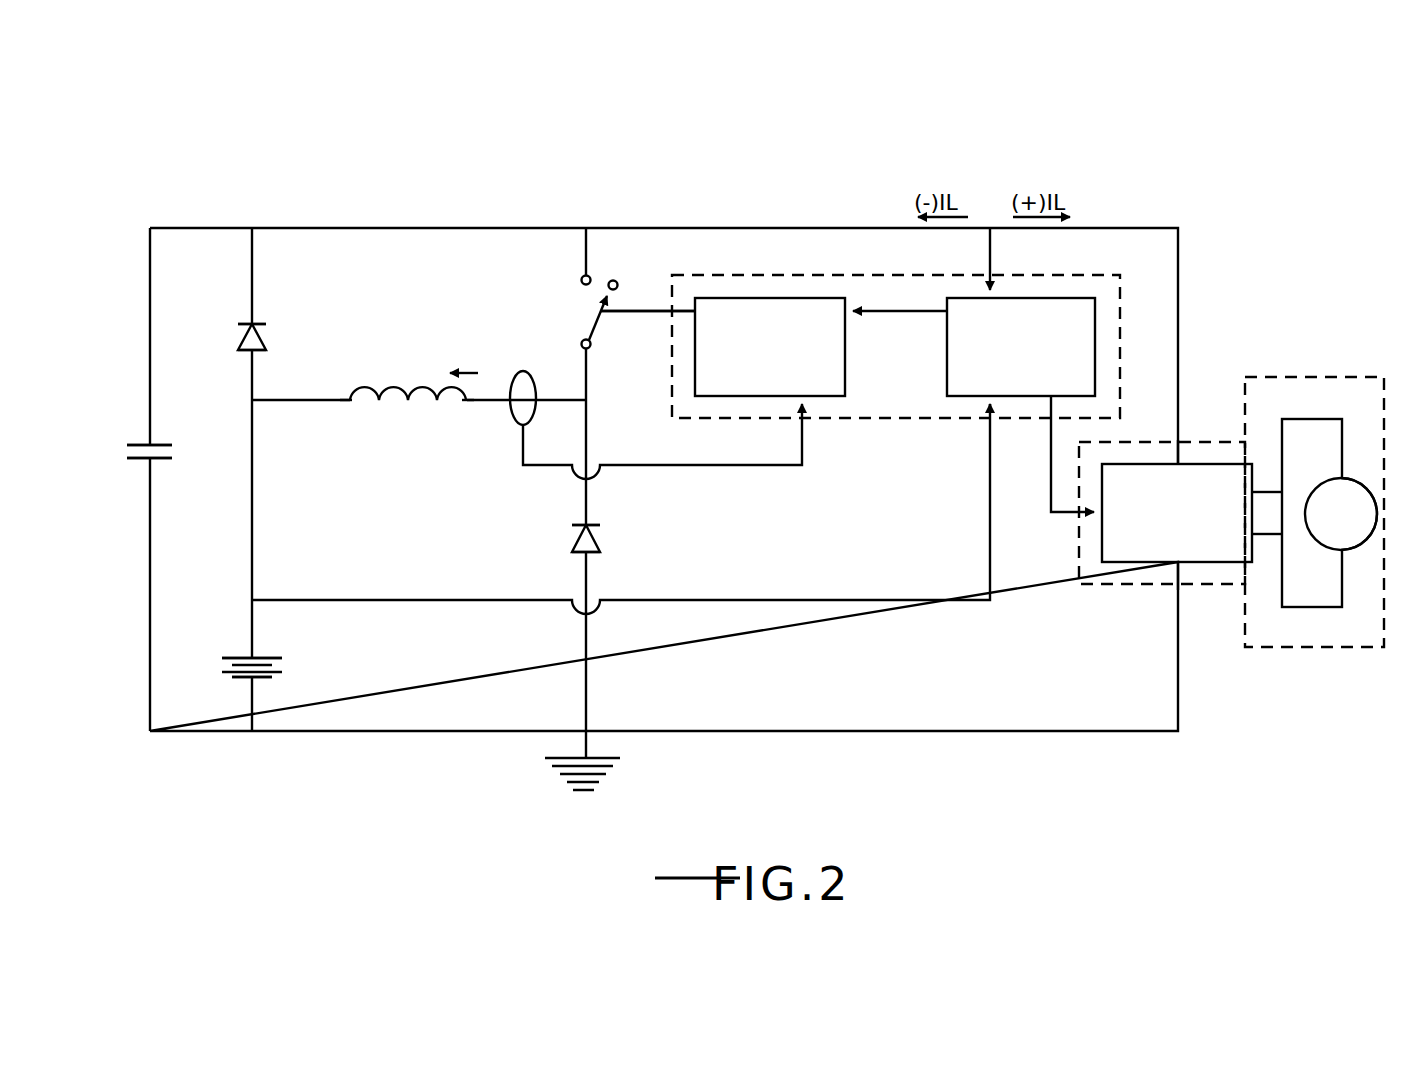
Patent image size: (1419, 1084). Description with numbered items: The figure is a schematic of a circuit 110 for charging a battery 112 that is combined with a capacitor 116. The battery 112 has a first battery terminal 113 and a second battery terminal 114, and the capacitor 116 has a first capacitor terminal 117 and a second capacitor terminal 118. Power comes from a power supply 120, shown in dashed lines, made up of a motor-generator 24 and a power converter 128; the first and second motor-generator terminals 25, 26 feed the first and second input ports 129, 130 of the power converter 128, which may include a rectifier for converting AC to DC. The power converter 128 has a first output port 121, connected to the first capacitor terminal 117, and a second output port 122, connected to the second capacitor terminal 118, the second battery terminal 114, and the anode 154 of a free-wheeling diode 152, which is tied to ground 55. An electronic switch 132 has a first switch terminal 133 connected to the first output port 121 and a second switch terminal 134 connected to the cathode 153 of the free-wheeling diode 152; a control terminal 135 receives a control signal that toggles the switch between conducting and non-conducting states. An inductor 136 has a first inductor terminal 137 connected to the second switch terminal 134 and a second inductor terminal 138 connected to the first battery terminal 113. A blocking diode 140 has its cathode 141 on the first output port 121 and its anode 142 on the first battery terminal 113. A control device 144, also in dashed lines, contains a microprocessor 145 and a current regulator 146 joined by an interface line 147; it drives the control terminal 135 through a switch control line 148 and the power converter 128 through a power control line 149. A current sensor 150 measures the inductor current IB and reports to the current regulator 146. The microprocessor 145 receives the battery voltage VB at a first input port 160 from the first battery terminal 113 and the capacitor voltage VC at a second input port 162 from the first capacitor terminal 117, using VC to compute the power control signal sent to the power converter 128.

The circuit 110 is at (774, 170).
The battery 112 is at (234, 652).
The first battery terminal 113 is at (254, 657).
The second battery terminal 114 is at (254, 680).
The capacitor 116 is at (147, 440).
The first capacitor terminal 117 is at (152, 446).
The second capacitor terminal 118 is at (152, 460).
The power supply 120 is at (1306, 374).
The first output port 121 is at (1179, 456).
The second output port 122 is at (1179, 568).
The power converter 128 is at (1142, 566).
The first input port 129 is at (1256, 488).
The second input port 130 is at (1256, 537).
The electronic switch 132 is at (565, 300).
The first switch terminal 133 is at (590, 276).
The second switch terminal 134 is at (590, 349).
The control terminal 135 is at (600, 305).
The inductor 136 is at (352, 392).
The first inductor terminal 137 is at (465, 404).
The second inductor terminal 138 is at (352, 404).
The blocking diode 140 is at (240, 334).
The cathode 141 is at (255, 324).
The anode 142 is at (254, 352).
The control device 144 is at (823, 275).
The microprocessor 145 is at (1097, 352).
The current regulator 146 is at (735, 298).
The interface line 147 is at (872, 314).
The switch control line 148 is at (632, 310).
The power control line 149 is at (1051, 510).
The current sensor 150 is at (522, 465).
The free-wheeling diode 152 is at (568, 547).
The cathode 153 is at (590, 523).
The anode 154 is at (590, 554).
The first input port 160 is at (990, 402).
The second input port 162 is at (996, 304).
The motor-generator 24 is at (1320, 486).
The first motor-generator terminal 25 is at (1346, 480).
The second motor-generator terminal 26 is at (1348, 549).
The ground 55 is at (622, 762).